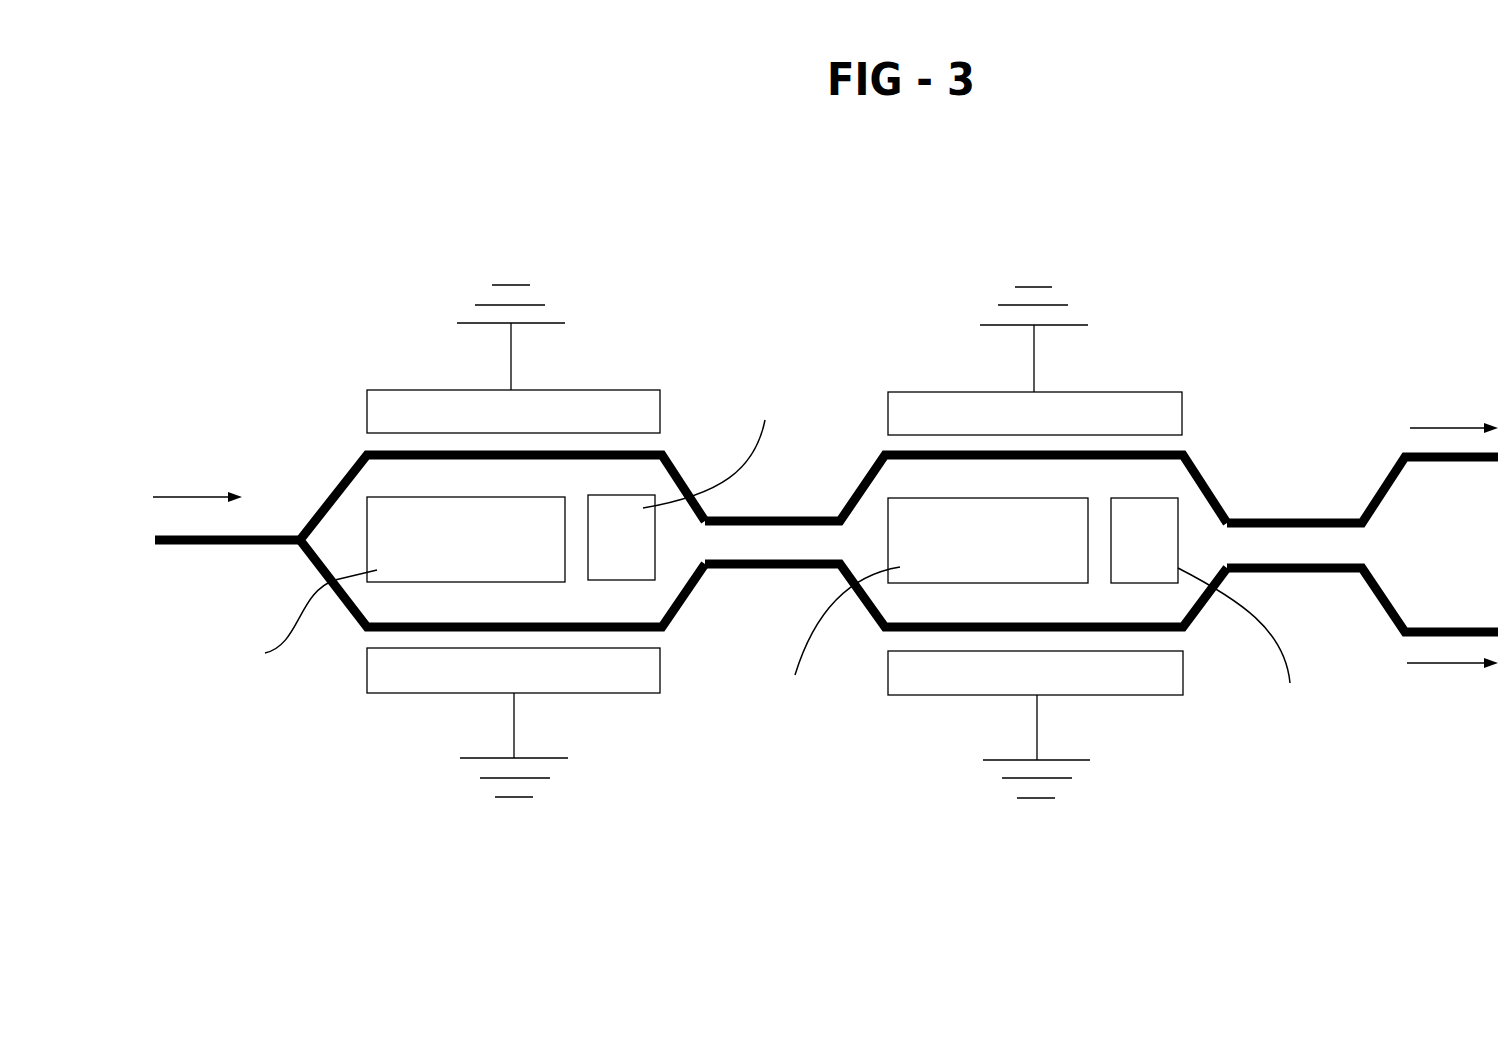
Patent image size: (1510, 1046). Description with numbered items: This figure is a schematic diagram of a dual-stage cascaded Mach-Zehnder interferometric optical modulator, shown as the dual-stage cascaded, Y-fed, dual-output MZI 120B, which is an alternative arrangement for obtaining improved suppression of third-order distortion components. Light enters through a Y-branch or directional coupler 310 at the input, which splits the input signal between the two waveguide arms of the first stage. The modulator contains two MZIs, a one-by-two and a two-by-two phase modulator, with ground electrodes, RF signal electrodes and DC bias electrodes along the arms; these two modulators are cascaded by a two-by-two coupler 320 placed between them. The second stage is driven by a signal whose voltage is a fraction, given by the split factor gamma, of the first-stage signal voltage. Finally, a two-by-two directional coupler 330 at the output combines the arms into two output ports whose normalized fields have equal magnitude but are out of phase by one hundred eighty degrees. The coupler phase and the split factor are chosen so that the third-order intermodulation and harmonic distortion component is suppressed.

The dual-stage cascaded MZI 120B is at (825, 290).
The Y-branch or directional coupler 310 is at (298, 463).
The 2×2 coupler 320 is at (724, 628).
The 2×2 directional coupler 330 is at (1297, 520).